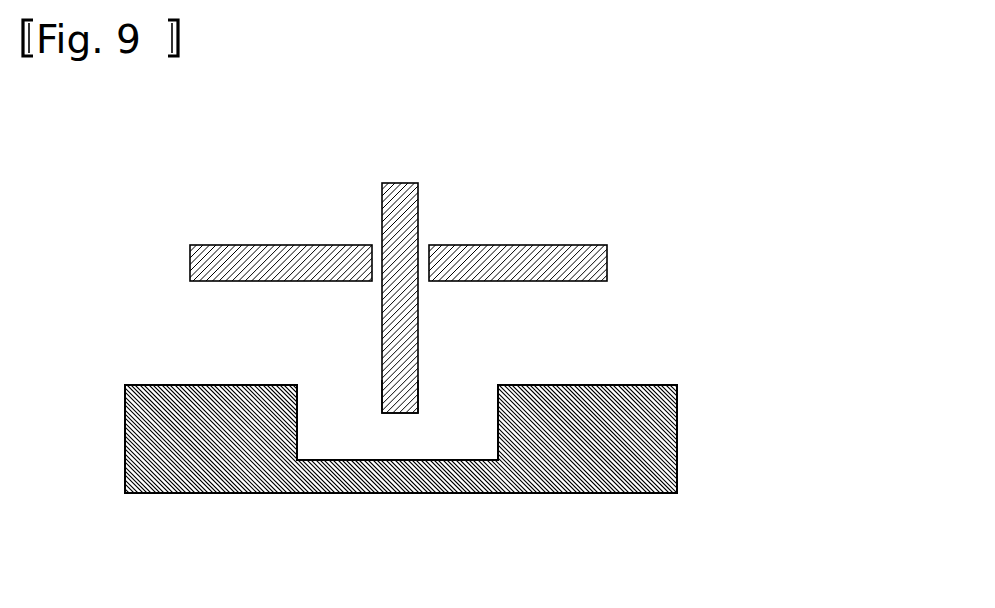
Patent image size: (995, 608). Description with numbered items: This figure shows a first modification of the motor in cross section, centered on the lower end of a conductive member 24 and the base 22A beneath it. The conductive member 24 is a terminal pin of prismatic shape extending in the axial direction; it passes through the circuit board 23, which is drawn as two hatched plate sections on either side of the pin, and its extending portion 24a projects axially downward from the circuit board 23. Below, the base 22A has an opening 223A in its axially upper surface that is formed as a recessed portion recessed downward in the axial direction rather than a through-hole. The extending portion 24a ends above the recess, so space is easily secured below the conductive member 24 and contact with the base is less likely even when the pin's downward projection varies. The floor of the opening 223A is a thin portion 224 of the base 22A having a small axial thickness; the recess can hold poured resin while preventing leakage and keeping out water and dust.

The base 22A is at (665, 425).
The opening 223A is at (495, 423).
The thin portion 224 is at (400, 472).
The circuit board 23 is at (537, 255).
The conductive member 24 is at (382, 203).
The extending portion 24a is at (395, 326).